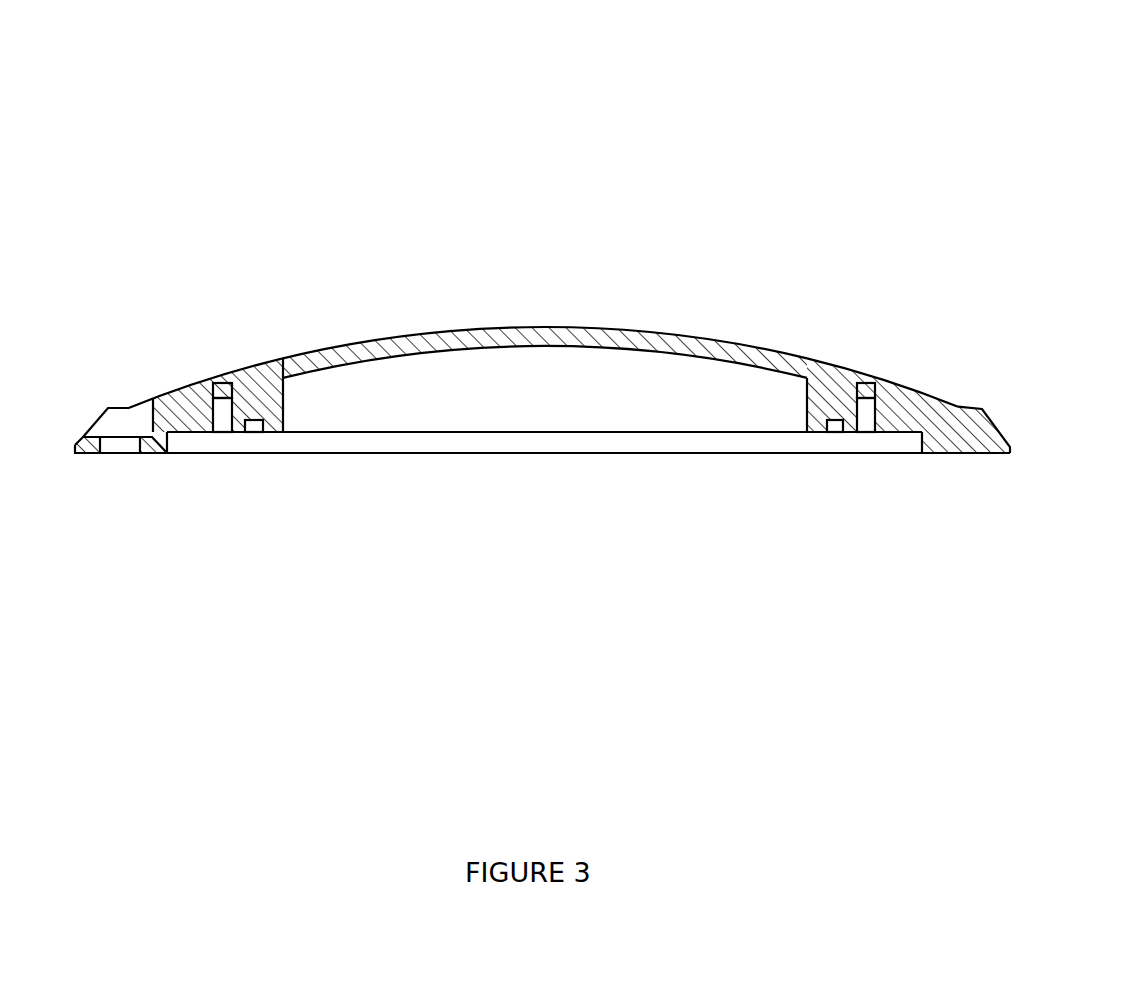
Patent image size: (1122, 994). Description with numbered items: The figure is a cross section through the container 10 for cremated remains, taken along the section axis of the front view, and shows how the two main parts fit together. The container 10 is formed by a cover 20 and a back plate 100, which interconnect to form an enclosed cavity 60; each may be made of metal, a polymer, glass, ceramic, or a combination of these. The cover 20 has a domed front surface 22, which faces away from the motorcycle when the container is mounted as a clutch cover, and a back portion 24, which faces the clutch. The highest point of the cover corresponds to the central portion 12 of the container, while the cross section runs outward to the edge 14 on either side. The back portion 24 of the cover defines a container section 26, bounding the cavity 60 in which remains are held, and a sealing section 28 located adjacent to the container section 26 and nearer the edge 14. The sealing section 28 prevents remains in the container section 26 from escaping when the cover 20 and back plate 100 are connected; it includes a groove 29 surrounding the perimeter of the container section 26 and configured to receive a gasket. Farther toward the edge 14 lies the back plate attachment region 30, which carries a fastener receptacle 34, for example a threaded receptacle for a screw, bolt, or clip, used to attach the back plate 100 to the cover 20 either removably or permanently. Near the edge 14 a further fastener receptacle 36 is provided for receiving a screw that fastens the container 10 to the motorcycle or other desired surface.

The container 10 is at (403, 155).
The central portion 12 is at (563, 313).
The edge 14 is at (1023, 456).
The cover 20 is at (682, 342).
The front surface 22 is at (322, 337).
The back portion 24 is at (143, 464).
The container section 26 is at (379, 442).
The sealing section 28 is at (273, 451).
The groove 29 is at (833, 427).
The back plate attachment region 30 is at (960, 453).
The fastener receptacle 34 is at (881, 409).
The fastener receptacle 36 is at (97, 423).
The enclosed cavity 60 is at (557, 413).
The back plate 100 is at (708, 450).